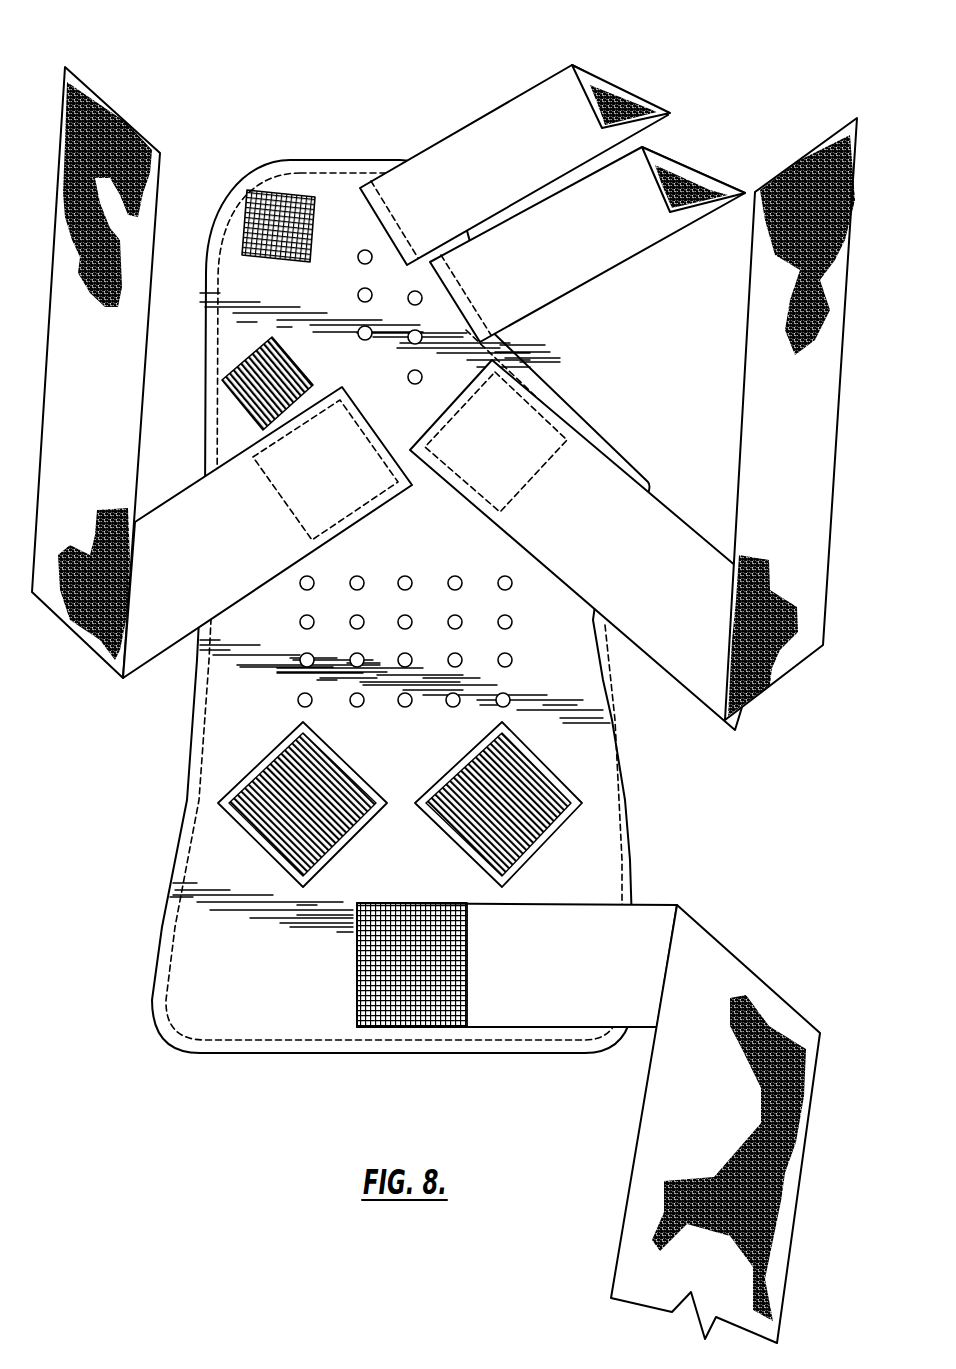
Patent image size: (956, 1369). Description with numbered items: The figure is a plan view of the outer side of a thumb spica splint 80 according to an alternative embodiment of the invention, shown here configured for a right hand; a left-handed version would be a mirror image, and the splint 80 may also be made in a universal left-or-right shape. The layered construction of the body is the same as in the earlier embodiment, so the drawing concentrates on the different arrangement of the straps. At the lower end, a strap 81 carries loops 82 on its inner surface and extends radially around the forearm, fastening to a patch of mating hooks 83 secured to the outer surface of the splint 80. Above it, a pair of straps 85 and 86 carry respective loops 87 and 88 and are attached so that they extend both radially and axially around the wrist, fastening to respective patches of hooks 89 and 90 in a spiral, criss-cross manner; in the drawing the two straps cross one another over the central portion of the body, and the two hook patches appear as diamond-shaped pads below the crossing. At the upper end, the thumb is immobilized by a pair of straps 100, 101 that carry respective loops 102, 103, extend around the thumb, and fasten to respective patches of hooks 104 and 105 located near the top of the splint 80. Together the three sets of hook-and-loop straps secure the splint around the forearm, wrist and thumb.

The thumb spica splint 80 is at (178, 82).
The strap 81 is at (553, 993).
The loops 82 is at (677, 1177).
The patch of mating hooks 83 is at (397, 1010).
The strap 85 is at (653, 538).
The strap 86 is at (158, 630).
The loops 87 is at (803, 548).
The loops 88 is at (67, 602).
The patch of hooks 89 is at (545, 830).
The patch of hooks 90 is at (223, 793).
The strap 100 is at (532, 146).
The strap 101 is at (632, 198).
The loops 102 is at (607, 97).
The loops 103 is at (708, 203).
The patch of hooks 104 is at (247, 205).
The patch of hooks 105 is at (222, 392).